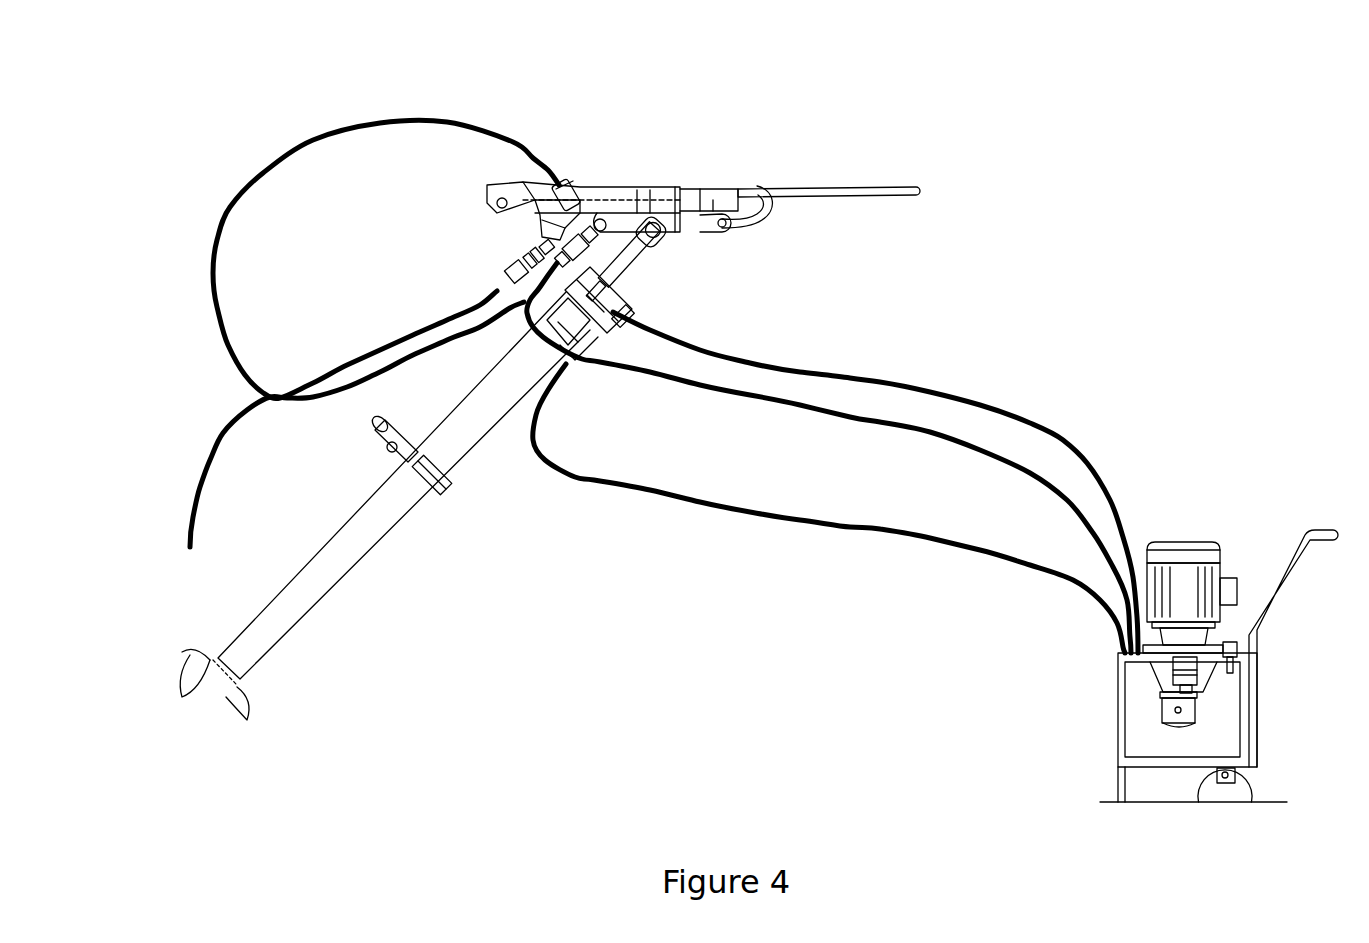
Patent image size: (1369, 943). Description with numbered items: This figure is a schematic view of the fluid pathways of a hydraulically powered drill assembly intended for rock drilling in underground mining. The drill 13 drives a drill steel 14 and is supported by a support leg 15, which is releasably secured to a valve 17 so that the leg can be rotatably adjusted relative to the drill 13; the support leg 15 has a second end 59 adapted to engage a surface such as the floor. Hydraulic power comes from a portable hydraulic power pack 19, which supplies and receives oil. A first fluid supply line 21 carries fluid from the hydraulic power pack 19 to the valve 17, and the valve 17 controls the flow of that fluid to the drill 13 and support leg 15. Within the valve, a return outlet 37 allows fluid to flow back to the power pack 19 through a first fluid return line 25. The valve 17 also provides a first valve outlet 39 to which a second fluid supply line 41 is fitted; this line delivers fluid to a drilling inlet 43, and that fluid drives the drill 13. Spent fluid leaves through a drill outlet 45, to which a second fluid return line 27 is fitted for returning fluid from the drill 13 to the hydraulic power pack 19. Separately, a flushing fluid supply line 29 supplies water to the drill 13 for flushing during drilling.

The drill 13 is at (702, 188).
The drill steel 14 is at (863, 186).
The support leg 15 is at (366, 548).
The valve 17 is at (630, 327).
The portable hydraulic power pack 19 is at (1142, 727).
The first fluid supply line 21 is at (886, 380).
The first fluid return line 25 is at (895, 533).
The second fluid return line 27 is at (1040, 487).
The flushing fluid supply line 29 is at (223, 433).
The return outlet 37 is at (612, 337).
The first valve outlet 39 is at (645, 250).
The second fluid supply line 41 is at (323, 133).
The drilling inlet 43 is at (563, 185).
The drill outlet 45 is at (542, 225).
The second end 59 is at (208, 702).